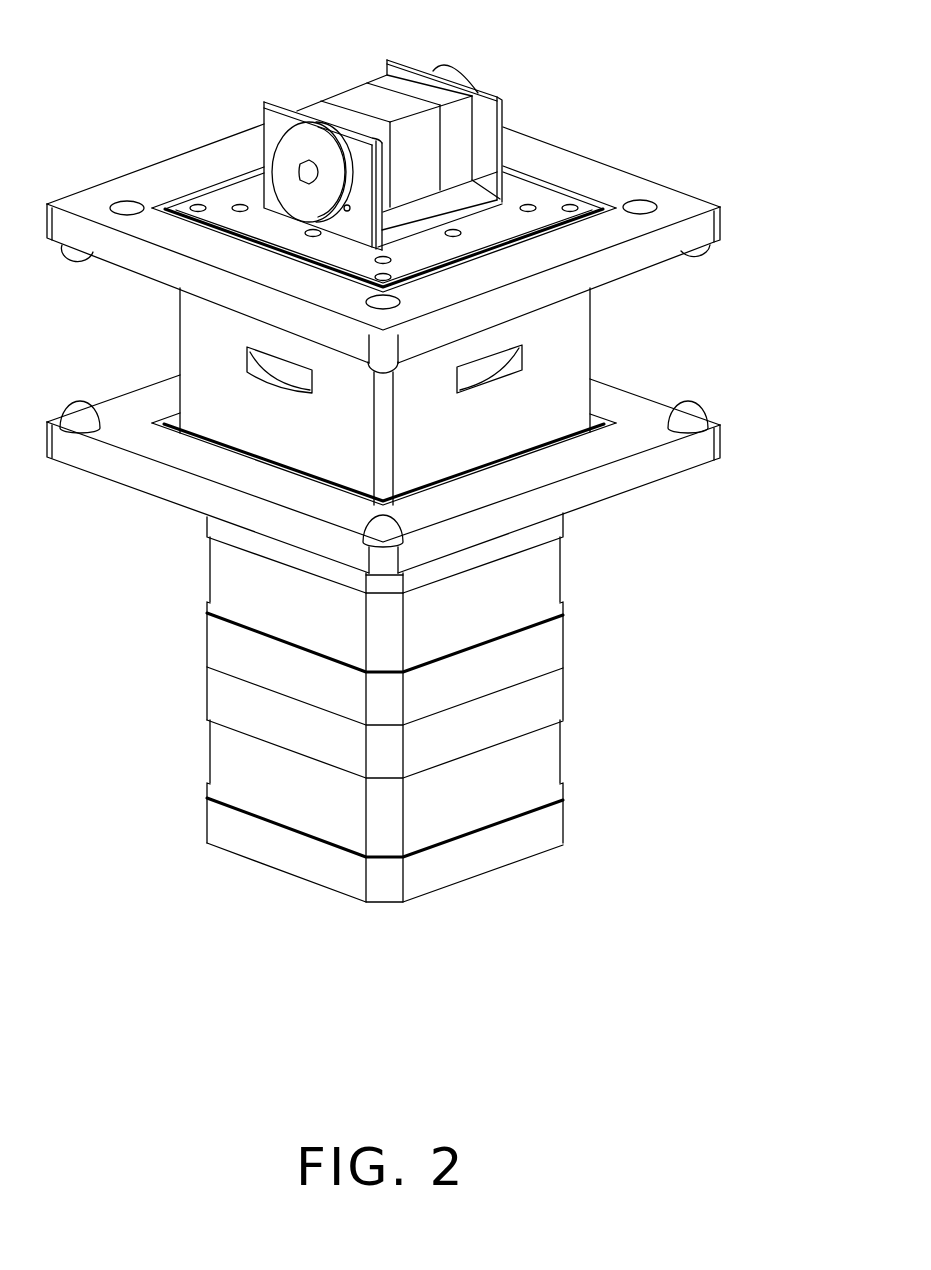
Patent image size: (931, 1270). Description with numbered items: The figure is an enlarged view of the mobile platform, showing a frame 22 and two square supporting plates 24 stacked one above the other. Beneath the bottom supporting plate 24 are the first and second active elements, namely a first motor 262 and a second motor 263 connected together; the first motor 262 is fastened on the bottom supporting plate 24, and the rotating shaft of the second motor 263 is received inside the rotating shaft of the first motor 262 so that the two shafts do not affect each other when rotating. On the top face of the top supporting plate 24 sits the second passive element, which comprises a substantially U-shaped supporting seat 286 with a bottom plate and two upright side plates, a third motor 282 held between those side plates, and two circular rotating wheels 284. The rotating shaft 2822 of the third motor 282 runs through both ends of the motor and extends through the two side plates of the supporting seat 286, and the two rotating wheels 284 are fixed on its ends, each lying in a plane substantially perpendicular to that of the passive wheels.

The frame 22 is at (556, 345).
The supporting plate 24 is at (706, 232).
The first motor 262 is at (517, 660).
The second motor 263 is at (525, 765).
The third motor 282 is at (372, 98).
The rotating wheel 284 is at (300, 143).
The supporting seat 286 is at (487, 123).
The rotating shaft 2822 is at (305, 168).